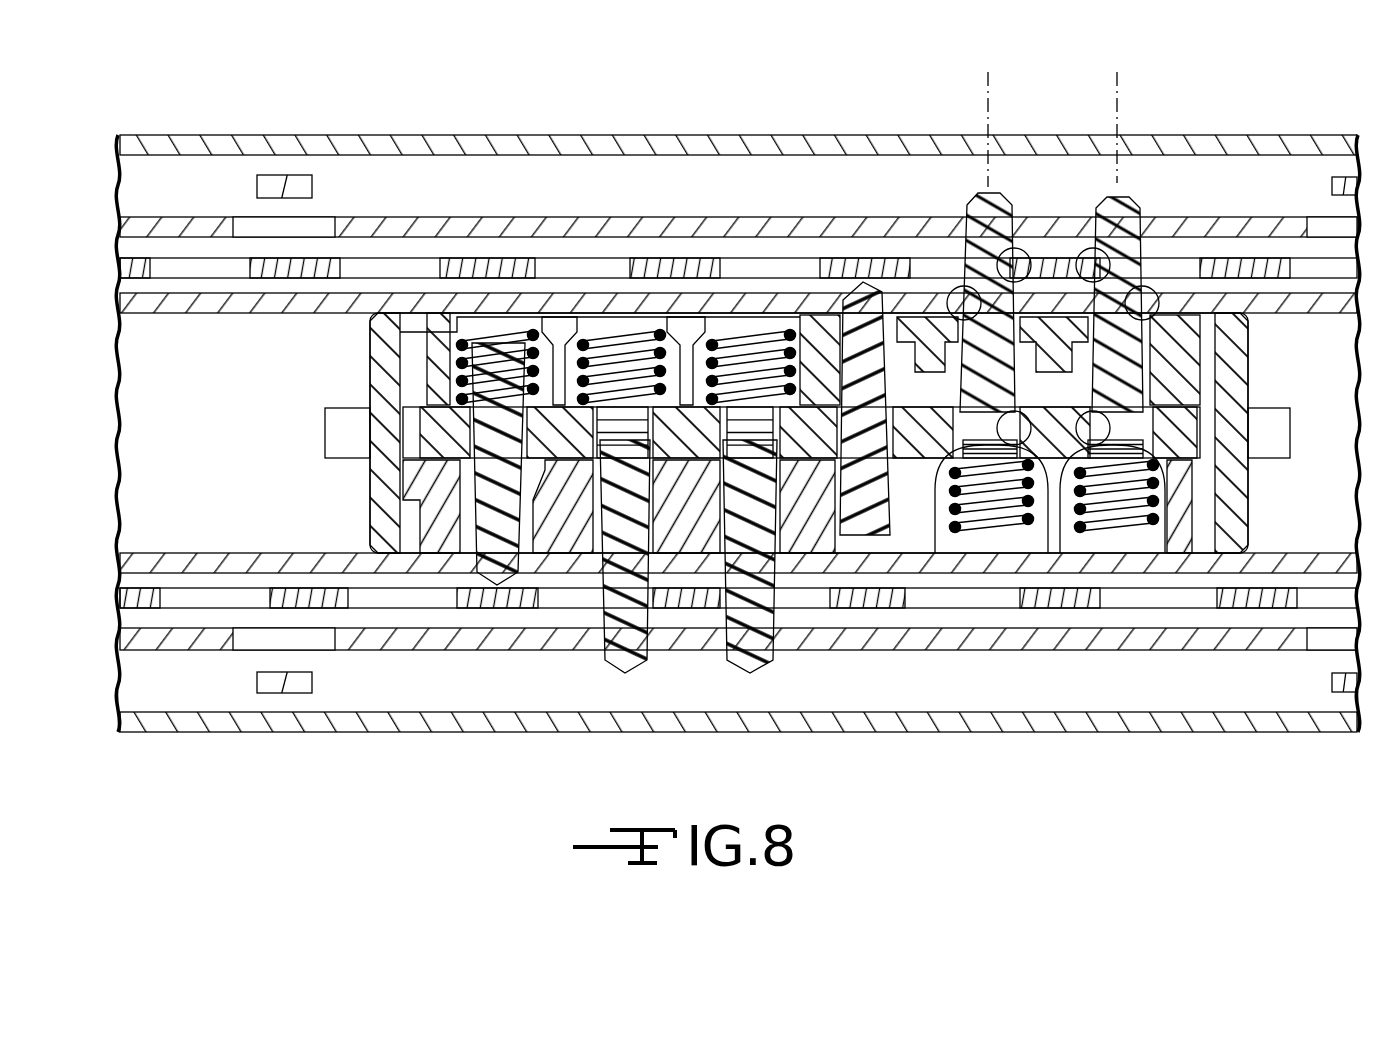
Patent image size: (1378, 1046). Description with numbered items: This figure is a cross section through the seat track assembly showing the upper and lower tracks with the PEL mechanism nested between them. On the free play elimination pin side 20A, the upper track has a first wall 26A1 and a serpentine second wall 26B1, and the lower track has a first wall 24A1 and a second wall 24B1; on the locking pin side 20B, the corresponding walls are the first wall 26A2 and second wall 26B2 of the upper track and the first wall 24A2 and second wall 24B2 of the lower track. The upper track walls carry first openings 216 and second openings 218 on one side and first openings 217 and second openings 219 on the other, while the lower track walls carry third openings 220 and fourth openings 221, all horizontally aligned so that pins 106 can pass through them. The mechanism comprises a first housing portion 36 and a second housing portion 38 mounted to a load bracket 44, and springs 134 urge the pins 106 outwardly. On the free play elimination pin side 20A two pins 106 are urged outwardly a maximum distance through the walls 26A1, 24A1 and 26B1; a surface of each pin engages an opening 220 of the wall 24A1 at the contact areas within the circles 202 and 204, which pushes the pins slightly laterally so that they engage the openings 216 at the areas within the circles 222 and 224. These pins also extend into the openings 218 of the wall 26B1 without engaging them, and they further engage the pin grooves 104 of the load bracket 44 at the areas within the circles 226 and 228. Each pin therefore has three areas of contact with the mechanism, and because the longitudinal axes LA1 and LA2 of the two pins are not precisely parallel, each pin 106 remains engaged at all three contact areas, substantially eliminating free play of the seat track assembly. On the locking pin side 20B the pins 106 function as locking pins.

The free play elimination pin side 20A is at (701, 216).
The locking pin side 20B is at (700, 654).
The second wall of the lower track 24B1 is at (1360, 134).
The second wall of the upper track 26B1 is at (125, 226).
The first wall of the lower track 24A1 is at (1340, 268).
The first wall of the upper track 26A1 is at (125, 300).
The first wall of the upper track 26A2 is at (125, 565).
The first wall of the lower track 24A2 is at (1327, 594).
The second wall of the upper track 26B2 is at (125, 640).
The second wall of the lower track 24B2 is at (1300, 722).
The first housing portion 36 is at (736, 504).
The second housing portion 38 is at (445, 538).
The load bracket 44 is at (343, 425).
The spring 134 is at (535, 331).
The first opening 217 is at (505, 575).
The fourth opening 221 is at (537, 597).
The second opening 219 is at (773, 638).
The first opening 216 is at (861, 292).
The pin 106 is at (993, 205).
The circle 204 is at (1086, 258).
The circle 202 is at (1018, 255).
The circle 222 is at (963, 297).
The circle 224 is at (1160, 290).
The third opening 220 is at (1195, 268).
The second opening 218 is at (848, 230).
The circle 226 is at (1036, 548).
The circle 228 is at (1062, 548).
The pin groove 104 is at (950, 545).
The longitudinal axis LA1 is at (988, 97).
The longitudinal axis LA2 is at (1120, 86).